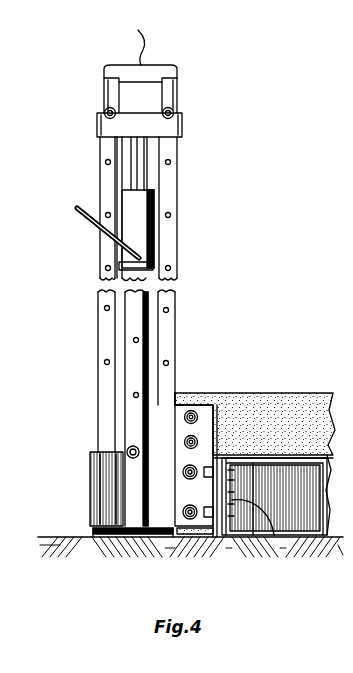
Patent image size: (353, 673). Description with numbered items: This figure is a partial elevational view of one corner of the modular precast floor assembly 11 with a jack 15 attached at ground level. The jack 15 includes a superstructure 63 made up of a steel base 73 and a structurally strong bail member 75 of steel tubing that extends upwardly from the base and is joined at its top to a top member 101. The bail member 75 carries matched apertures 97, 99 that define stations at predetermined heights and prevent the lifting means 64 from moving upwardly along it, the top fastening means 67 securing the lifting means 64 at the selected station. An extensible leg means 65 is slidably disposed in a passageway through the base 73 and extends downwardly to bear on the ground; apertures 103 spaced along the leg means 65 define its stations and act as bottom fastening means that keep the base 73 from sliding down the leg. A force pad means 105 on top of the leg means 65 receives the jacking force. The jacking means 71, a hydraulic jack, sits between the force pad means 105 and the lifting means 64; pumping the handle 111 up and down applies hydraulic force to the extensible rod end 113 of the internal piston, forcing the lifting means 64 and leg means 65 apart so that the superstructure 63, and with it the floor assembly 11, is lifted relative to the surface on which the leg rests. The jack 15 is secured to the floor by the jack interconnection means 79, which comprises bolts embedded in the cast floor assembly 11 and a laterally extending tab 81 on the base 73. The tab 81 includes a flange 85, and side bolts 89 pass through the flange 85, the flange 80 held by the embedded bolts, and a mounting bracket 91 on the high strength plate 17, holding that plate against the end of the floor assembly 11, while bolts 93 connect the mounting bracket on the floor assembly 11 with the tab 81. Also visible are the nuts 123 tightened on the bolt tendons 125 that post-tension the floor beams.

The floor assembly 11 is at (300, 393).
The jack 15 is at (204, 202).
The high strength plate 17 is at (312, 515).
The superstructure 63 is at (86, 384).
The lifting means 64 is at (90, 120).
The leg means 65 is at (160, 320).
The top fastening means 67 is at (170, 105).
The jacking means 71 is at (162, 231).
The base 73 is at (100, 490).
The bail member 75 is at (108, 95).
The jack interconnection means 79 is at (168, 560).
The flange 80 is at (220, 455).
The tab 81 is at (178, 498).
The flange 85 is at (245, 498).
The side bolts 89 is at (262, 515).
The mounting bracket 91 is at (240, 498).
The bolts 93 is at (205, 500).
The apertures 97 is at (106, 162).
The apertures 99 is at (170, 162).
The top member 101 is at (62, 584).
The apertures 103 is at (134, 340).
The force pad means 105 is at (137, 268).
The handle 111 is at (86, 227).
The extensible rod end 113 is at (148, 152).
The nuts 123 is at (182, 405).
The bolt tendons 125 is at (184, 420).